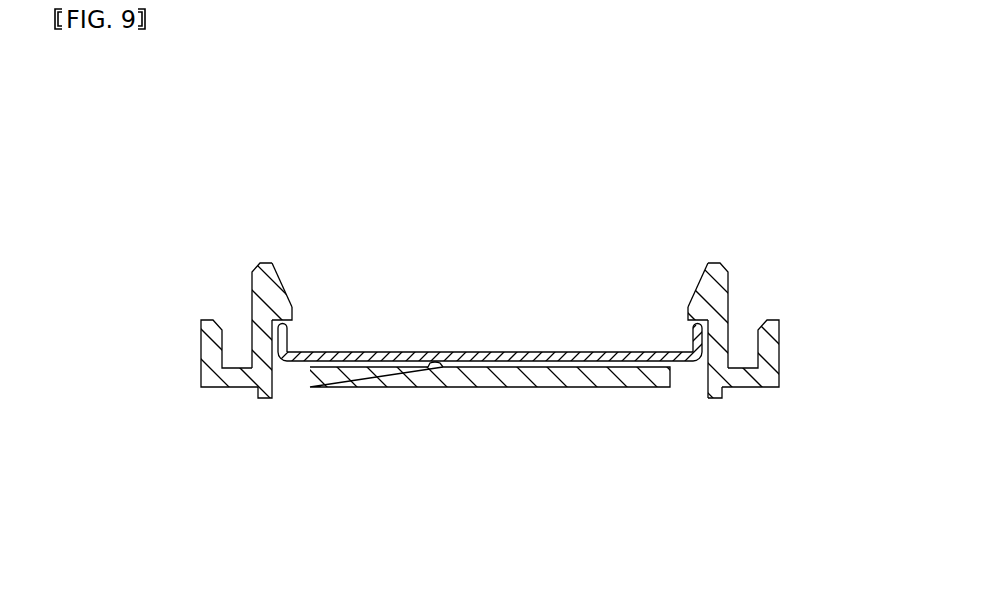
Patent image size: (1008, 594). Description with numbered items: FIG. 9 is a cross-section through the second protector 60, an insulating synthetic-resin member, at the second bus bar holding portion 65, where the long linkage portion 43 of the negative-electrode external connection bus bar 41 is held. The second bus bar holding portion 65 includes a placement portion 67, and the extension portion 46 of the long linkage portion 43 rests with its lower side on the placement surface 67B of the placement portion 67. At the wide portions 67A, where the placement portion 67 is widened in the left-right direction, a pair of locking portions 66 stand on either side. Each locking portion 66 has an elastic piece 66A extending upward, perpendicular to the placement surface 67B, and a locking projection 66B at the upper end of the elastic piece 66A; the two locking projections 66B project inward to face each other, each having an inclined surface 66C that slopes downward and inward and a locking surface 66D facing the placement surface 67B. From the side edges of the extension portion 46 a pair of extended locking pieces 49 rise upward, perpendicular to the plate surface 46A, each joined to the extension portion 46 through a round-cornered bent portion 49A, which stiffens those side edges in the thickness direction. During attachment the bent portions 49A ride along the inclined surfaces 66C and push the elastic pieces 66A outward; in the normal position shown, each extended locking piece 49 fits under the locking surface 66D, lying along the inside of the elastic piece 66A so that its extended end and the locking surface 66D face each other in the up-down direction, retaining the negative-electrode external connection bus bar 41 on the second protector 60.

The negative-electrode external connection bus bar 41 is at (574, 320).
The long linkage portion 43 is at (490, 292).
The extension portion 46 is at (481, 358).
The plate surface 46A is at (395, 352).
The extended locking piece 49 is at (288, 334).
The bent portion 49A is at (283, 363).
The second protector 60 is at (790, 377).
The second bus bar holding portion 65 is at (480, 414).
The locking portion 66 is at (247, 283).
The elastic piece 66A is at (271, 331).
The locking projection 66B is at (284, 292).
The inclined surface 66C is at (691, 302).
The locking surface 66D is at (707, 325).
The placement portion 67 is at (487, 383).
The wide portion 67A is at (208, 345).
The placement surface 67B is at (428, 368).